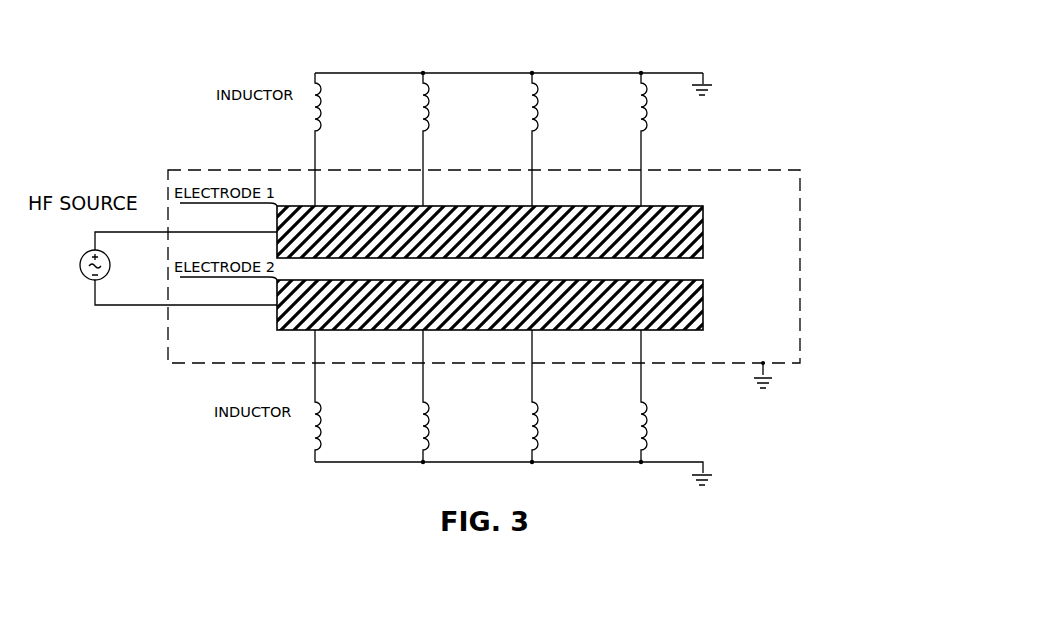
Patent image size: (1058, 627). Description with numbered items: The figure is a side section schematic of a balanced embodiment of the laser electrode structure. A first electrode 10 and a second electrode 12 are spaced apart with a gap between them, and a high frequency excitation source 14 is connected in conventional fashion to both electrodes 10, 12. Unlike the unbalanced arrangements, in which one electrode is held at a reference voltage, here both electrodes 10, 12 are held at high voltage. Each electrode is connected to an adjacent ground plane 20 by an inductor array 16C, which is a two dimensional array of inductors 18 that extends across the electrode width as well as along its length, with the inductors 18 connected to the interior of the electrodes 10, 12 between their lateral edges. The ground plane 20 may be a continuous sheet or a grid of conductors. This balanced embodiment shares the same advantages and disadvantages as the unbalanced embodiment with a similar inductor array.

The inductor array 16C is at (572, 71).
The ground plane 20 is at (712, 78).
The inductor 18 is at (648, 130).
The first electrode 10 is at (706, 232).
The second electrode 12 is at (706, 304).
The high frequency excitation source 14 is at (82, 282).